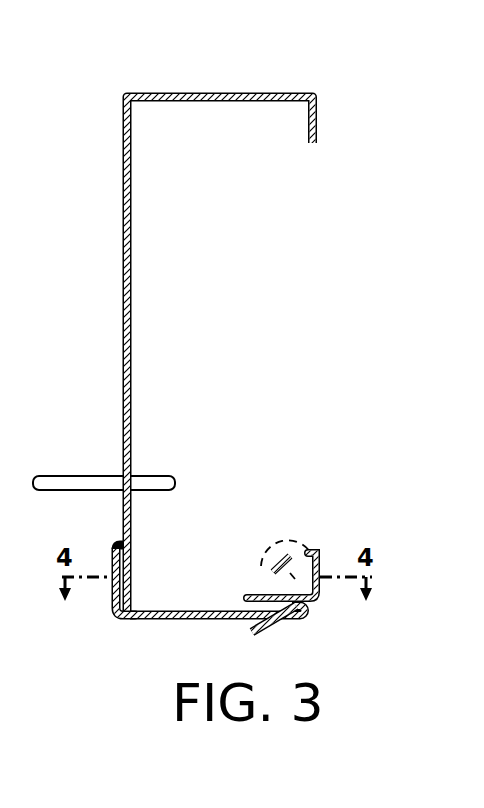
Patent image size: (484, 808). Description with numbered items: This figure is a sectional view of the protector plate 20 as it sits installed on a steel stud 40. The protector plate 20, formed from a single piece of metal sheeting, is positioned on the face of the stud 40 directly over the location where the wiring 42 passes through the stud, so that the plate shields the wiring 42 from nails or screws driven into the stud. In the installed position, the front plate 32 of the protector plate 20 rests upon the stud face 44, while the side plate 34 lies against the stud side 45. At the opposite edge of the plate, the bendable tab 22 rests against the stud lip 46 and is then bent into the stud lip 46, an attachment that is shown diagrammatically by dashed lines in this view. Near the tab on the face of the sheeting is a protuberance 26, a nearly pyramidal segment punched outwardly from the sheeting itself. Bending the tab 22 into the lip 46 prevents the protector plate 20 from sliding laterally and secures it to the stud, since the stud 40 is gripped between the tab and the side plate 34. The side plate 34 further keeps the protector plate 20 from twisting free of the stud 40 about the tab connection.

The protector plate 20 is at (146, 648).
The bendable tab 22 is at (254, 594).
The protuberance 26 is at (262, 632).
The front plate 32 is at (200, 622).
The side plate 34 is at (111, 603).
The steel stud 40 is at (80, 308).
The wiring 42 is at (85, 476).
The stud face 44 is at (170, 608).
The stud side 45 is at (132, 552).
The stud lip 46 is at (246, 602).